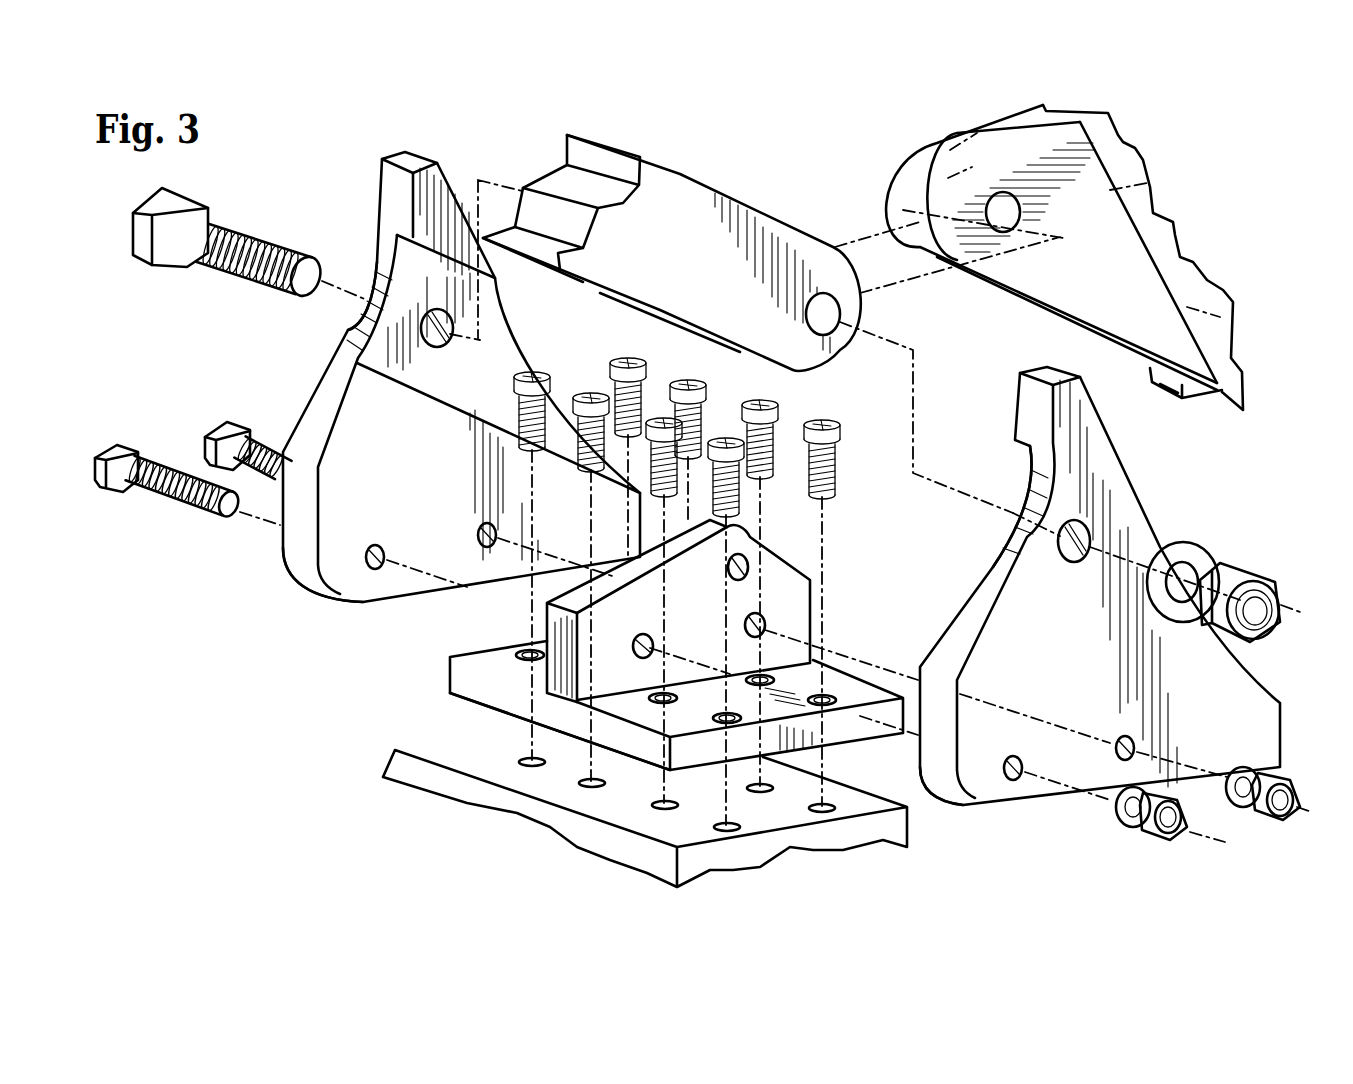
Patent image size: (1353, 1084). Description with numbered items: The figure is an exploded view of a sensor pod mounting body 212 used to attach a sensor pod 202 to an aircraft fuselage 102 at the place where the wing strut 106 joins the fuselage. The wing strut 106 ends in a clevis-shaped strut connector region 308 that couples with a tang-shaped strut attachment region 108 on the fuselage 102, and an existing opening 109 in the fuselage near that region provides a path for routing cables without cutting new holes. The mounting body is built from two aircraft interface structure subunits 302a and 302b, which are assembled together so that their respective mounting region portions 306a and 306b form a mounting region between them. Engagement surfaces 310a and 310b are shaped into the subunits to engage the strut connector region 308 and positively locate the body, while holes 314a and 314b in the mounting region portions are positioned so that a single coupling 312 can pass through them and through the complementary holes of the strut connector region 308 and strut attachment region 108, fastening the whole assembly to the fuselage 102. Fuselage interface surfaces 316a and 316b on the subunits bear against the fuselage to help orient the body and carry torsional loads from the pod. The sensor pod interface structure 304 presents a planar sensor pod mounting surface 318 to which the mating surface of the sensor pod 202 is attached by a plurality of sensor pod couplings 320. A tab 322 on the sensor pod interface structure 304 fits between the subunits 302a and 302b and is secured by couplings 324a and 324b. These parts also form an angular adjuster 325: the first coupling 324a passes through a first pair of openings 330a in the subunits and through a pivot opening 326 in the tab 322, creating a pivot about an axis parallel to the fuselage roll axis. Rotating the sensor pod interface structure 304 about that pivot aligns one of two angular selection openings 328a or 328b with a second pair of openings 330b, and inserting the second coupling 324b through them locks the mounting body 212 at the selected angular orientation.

The fuselage 102 is at (1163, 222).
The wing strut 106 is at (658, 245).
The strut attachment region 108 is at (1104, 225).
The opening 109 is at (1204, 392).
The sensor pod 202 is at (518, 812).
The sensor pod mounting body 212 is at (197, 830).
The aircraft interface structure subunit 302a is at (370, 583).
The aircraft interface structure subunit 302b is at (1000, 800).
The sensor pod interface structure 304 is at (483, 685).
The mounting region portion 306a is at (500, 345).
The mounting region portion 306b is at (980, 516).
The strut connector region 308 is at (737, 190).
The engagement surface 310a is at (371, 358).
The engagement surface 310b is at (1030, 462).
The coupling 312 is at (212, 178).
The hole 314a is at (443, 343).
The hole 314b is at (1072, 556).
The fuselage interface surface 316a is at (478, 153).
The fuselage interface surface 316b is at (1160, 441).
The sensor pod mounting surface 318 is at (503, 722).
The sensor pod couplings 320 is at (822, 424).
The tab 322 is at (556, 634).
The first coupling 324a is at (160, 508).
The second coupling 324b is at (274, 409).
The angular adjuster 325 is at (785, 596).
The pivot opening 326 is at (632, 668).
The angular selection opening 328a is at (748, 622).
The angular selection opening 328b is at (733, 572).
The first pair of openings 330a is at (403, 524).
The second pair of openings 330b is at (482, 530).